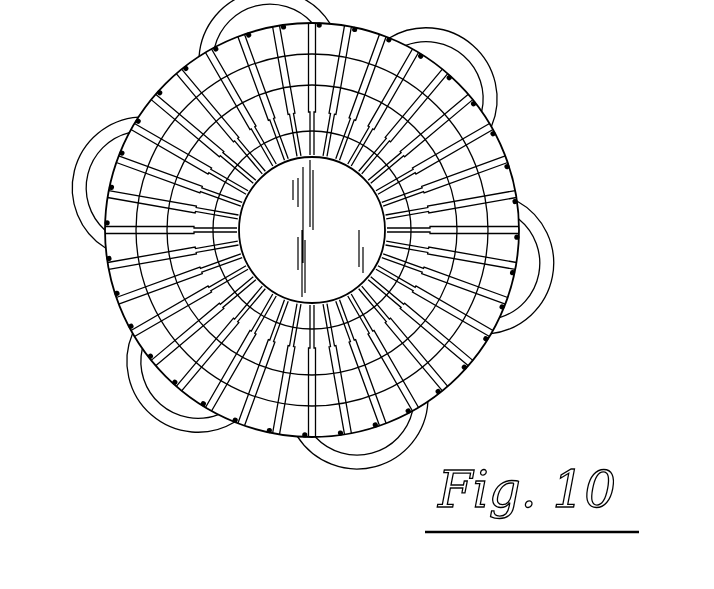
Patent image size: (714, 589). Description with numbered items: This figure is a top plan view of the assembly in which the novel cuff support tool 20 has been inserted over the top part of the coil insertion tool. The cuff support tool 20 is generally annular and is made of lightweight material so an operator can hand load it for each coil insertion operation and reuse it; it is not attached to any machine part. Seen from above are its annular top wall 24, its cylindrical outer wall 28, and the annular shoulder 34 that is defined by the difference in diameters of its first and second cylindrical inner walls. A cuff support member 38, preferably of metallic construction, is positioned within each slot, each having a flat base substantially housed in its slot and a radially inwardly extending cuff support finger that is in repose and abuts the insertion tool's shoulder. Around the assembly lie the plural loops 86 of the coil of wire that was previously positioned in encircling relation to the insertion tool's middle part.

The cuff support tool 20 is at (517, 172).
The annular top wall 24 is at (117, 284).
The cylindrical outer wall 28 is at (170, 83).
The annular shoulder 34 is at (478, 243).
The cuff support member 38 is at (472, 104).
The loops 86 is at (102, 122).